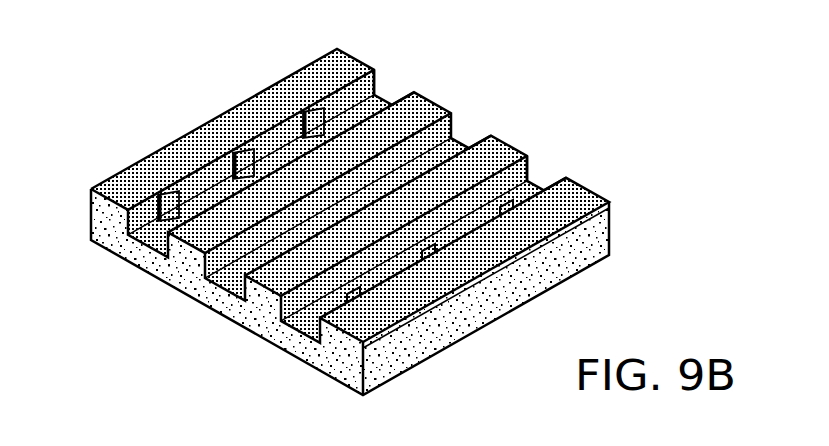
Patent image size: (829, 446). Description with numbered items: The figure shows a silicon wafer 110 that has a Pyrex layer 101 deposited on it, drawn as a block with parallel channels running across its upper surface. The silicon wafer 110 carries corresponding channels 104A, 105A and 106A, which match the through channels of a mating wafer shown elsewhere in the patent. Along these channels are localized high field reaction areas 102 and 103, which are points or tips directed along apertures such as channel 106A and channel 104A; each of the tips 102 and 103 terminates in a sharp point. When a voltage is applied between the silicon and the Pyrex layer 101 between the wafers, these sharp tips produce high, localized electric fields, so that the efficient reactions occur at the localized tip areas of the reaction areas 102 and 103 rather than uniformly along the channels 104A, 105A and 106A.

The Pyrex layer 101 is at (418, 88).
The localized high field reaction area 102 is at (157, 176).
The localized high field reaction area 103 is at (348, 288).
The channel 104A is at (527, 177).
The channel 105A is at (448, 130).
The channel 106A is at (375, 89).
The silicon wafer 110 is at (604, 230).